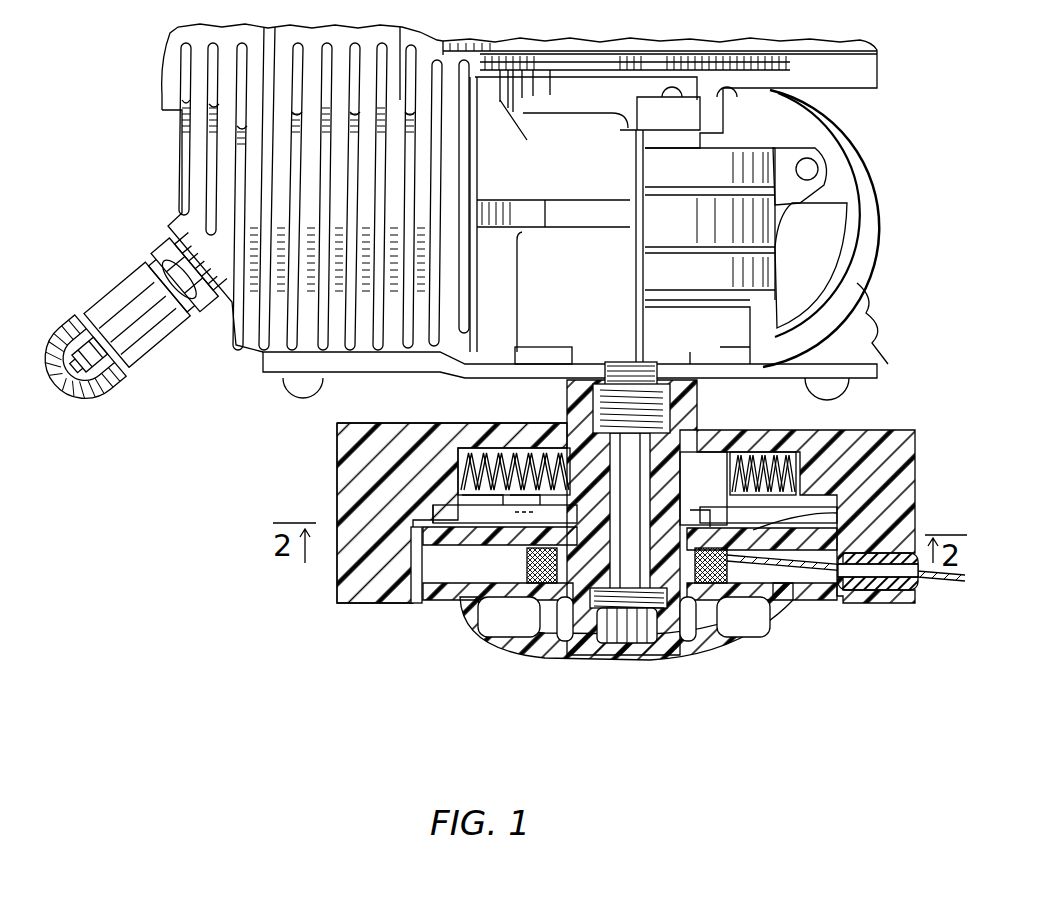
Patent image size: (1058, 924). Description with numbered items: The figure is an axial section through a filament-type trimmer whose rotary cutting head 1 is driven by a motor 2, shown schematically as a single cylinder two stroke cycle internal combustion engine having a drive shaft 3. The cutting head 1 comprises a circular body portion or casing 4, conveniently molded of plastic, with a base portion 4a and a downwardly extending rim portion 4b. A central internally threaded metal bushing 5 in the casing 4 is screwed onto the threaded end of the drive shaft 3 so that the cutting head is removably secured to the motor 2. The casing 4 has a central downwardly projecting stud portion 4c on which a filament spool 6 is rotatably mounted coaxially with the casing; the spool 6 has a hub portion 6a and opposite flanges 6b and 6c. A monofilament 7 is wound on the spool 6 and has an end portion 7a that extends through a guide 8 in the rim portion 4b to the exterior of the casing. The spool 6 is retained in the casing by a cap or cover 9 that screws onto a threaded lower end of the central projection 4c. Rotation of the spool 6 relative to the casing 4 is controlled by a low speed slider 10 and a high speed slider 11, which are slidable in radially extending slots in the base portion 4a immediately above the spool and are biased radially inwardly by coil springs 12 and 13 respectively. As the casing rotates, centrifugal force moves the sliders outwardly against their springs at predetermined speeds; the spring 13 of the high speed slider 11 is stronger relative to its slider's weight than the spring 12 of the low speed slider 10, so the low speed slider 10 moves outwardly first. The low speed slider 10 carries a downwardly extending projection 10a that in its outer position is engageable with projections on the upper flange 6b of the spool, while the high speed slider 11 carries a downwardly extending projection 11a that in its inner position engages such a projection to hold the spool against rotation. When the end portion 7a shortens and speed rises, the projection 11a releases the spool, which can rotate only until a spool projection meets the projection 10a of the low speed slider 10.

The rotary cutting head 1 is at (624, 520).
The motor 2 is at (180, 160).
The drive shaft 3 is at (622, 378).
The casing 4 is at (599, 516).
The base portion 4a is at (441, 433).
The rim portion 4b is at (352, 595).
The stud portion 4c is at (596, 460).
The metal bushing 5 is at (665, 406).
The filament spool 6 is at (624, 624).
The hub portion 6a is at (564, 628).
The upper flange 6b is at (474, 538).
The flange 6c is at (452, 600).
The monofilament 7 is at (712, 582).
The end portion 7a is at (947, 585).
The guide 8 is at (866, 590).
The cap 9 is at (650, 662).
The low speed slider 10 is at (724, 455).
The projection 10a is at (760, 525).
The high speed slider 11 is at (592, 455).
The projection 11a is at (432, 512).
The coil spring 12 is at (781, 452).
The coil spring 13 is at (445, 478).